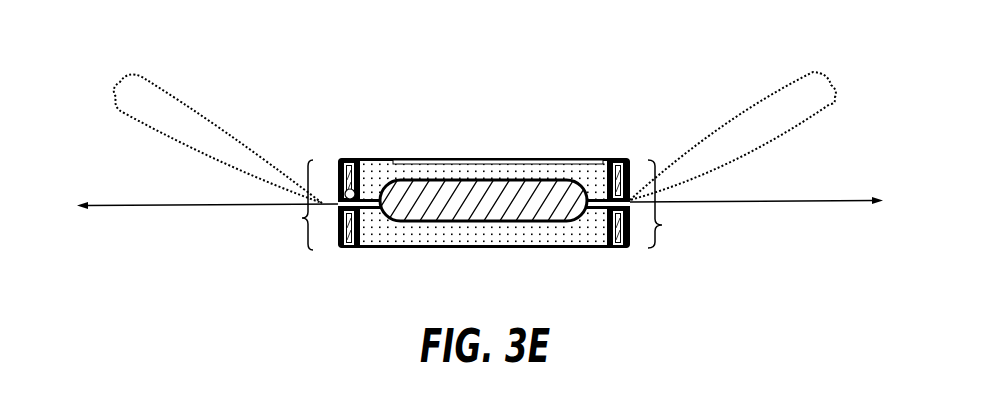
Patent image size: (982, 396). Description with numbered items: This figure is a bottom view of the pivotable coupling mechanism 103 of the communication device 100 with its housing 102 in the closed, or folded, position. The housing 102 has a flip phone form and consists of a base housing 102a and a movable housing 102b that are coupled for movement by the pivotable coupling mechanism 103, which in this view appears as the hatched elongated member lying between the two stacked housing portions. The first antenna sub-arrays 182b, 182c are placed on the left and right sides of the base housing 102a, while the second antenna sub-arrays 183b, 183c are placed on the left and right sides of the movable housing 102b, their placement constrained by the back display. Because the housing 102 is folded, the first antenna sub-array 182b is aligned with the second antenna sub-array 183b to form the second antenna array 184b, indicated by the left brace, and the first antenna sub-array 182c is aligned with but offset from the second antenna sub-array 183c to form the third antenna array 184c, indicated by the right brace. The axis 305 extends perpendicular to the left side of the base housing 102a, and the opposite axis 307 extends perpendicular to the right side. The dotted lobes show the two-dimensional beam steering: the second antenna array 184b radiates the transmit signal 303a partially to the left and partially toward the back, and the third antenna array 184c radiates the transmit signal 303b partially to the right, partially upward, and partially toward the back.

The communication device 100 is at (342, 139).
The housing 102 is at (598, 158).
The base housing 102a is at (483, 247).
The movable housing 102b is at (382, 157).
The pivotable coupling mechanism 103 is at (560, 220).
The first antenna sub-array 182b is at (350, 247).
The first antenna sub-array 182c is at (607, 247).
The second antenna sub-array 183b is at (339, 158).
The second antenna sub-array 183c is at (630, 158).
The second antenna array 184b is at (285, 205).
The third antenna array 184c is at (678, 204).
The transmit signal 303a is at (127, 118).
The transmit signal 303b is at (762, 90).
The axis 305 is at (173, 207).
The axis 307 is at (748, 203).